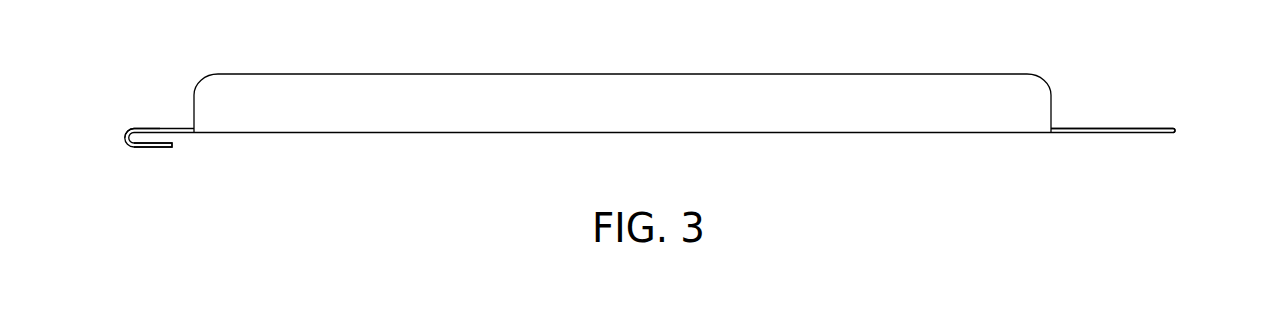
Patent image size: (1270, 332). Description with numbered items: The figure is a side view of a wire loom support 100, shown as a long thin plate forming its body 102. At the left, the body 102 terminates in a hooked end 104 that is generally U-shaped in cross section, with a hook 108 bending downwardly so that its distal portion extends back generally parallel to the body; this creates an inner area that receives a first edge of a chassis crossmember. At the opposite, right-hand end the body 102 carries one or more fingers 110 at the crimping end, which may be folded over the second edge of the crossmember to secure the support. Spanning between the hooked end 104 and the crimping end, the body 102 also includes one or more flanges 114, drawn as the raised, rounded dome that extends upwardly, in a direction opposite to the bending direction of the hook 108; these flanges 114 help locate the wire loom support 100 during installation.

The wire loom support 100 is at (650, 185).
The body 102 is at (1090, 128).
The hooked end 104 is at (133, 128).
The hook 108 is at (155, 147).
The fingers 110 is at (1173, 130).
The flanges 114 is at (869, 73).